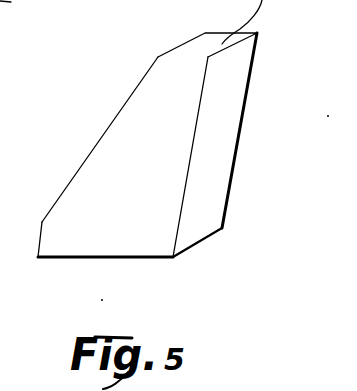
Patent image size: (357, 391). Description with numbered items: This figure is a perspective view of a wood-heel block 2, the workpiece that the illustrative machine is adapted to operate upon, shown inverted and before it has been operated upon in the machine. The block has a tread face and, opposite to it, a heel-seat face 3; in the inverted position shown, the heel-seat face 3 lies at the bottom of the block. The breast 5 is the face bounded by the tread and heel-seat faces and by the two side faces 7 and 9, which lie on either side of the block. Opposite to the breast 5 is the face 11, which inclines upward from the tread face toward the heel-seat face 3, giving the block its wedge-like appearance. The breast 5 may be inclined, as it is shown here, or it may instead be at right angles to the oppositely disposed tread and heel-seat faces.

The wood-heel block 2 is at (107, 129).
The heel-seat face 3 is at (137, 258).
The breast 5 is at (215, 147).
The side face 7 is at (97, 217).
The side face 9 is at (247, 93).
The face opposite to the breast 11 is at (66, 187).